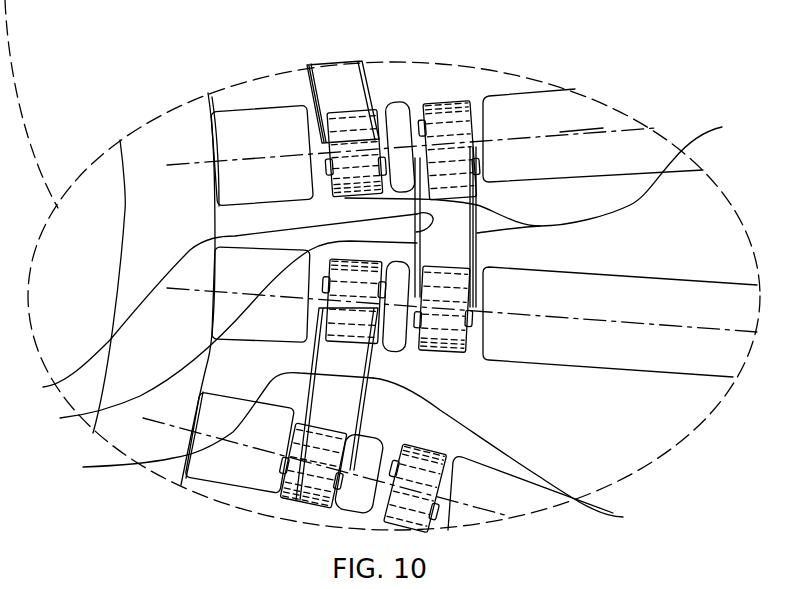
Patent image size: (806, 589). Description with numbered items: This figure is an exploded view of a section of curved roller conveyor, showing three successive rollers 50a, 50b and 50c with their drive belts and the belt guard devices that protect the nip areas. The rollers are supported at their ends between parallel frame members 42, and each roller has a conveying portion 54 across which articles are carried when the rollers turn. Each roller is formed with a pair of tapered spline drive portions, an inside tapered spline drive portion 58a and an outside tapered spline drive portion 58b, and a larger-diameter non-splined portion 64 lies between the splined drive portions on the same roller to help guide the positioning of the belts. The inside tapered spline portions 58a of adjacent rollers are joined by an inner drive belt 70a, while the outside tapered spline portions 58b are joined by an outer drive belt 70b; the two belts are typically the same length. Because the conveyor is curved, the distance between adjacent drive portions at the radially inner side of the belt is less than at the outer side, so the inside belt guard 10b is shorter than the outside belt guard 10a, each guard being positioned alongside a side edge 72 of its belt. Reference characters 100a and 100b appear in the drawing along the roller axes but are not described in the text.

The outside belt guard 10a is at (397, 62).
The inside belt guard 10b is at (312, 101).
The frame member 42 is at (182, 224).
The roller 50a is at (573, 110).
The roller 50b is at (663, 347).
The roller 50c is at (480, 480).
The conveying portion 54 is at (595, 161).
The inside tapered spline drive portion 58a is at (322, 146).
The outside tapered spline drive portion 58b is at (477, 137).
The non-splined portion 64 is at (397, 123).
The inner drive belt 70a is at (353, 94).
The outer drive belt 70b is at (463, 254).
The side edge of belt 72 is at (43, 387).
The first axis 100a is at (603, 128).
The second axis 100b is at (620, 323).